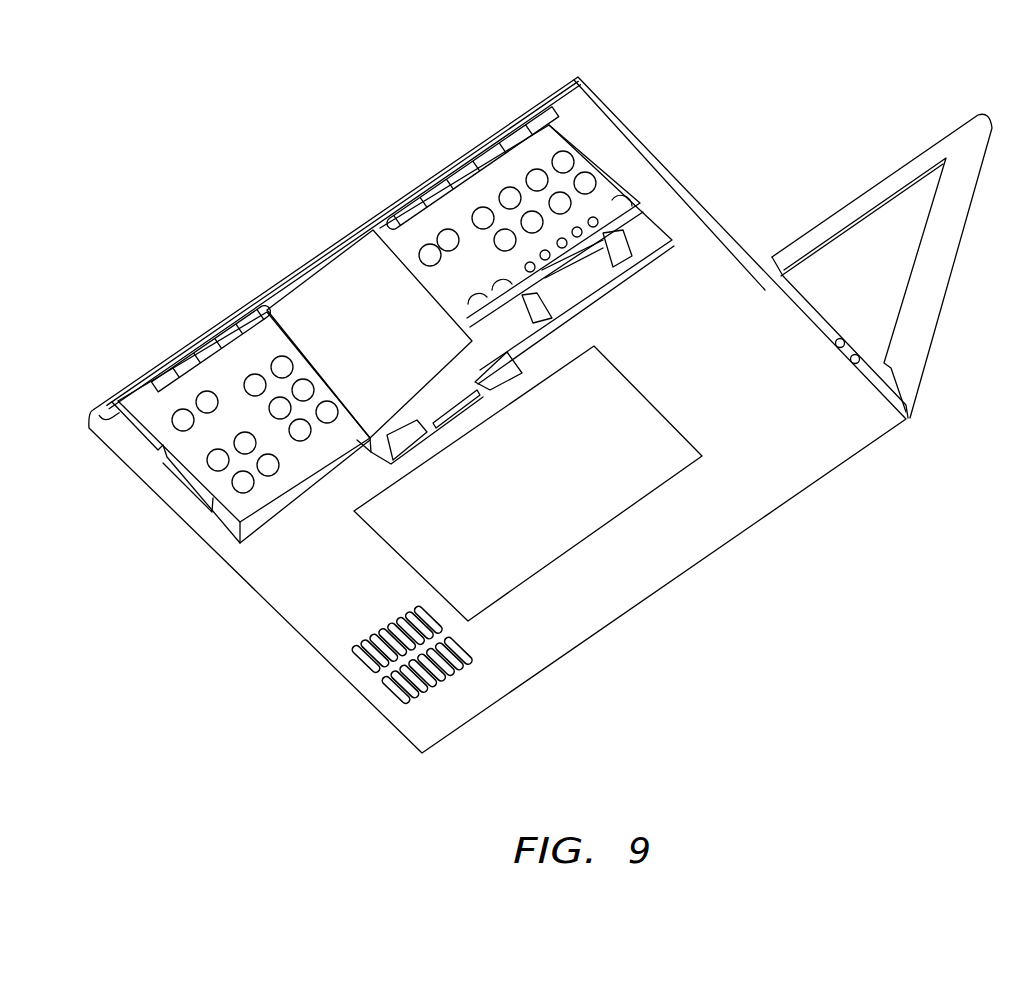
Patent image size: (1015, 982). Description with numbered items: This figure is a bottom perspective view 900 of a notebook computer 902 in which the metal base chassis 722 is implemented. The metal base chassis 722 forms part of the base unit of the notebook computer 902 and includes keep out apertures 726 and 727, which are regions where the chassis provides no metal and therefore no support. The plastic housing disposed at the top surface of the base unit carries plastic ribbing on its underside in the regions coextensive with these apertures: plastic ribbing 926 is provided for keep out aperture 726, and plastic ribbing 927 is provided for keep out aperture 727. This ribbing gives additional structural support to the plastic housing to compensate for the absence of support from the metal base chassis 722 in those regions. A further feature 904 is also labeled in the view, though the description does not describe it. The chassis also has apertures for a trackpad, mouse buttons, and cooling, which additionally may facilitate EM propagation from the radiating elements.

The bottom perspective view 900 is at (268, 677).
The notebook computer 902 is at (656, 123).
The metal base chassis 722 is at (353, 288).
The keep out aperture 726 is at (248, 289).
The keep out aperture 727 is at (532, 85).
The latch notch 904 is at (257, 292).
The plastic ribbing 926 is at (233, 323).
The plastic ribbing 927 is at (520, 127).